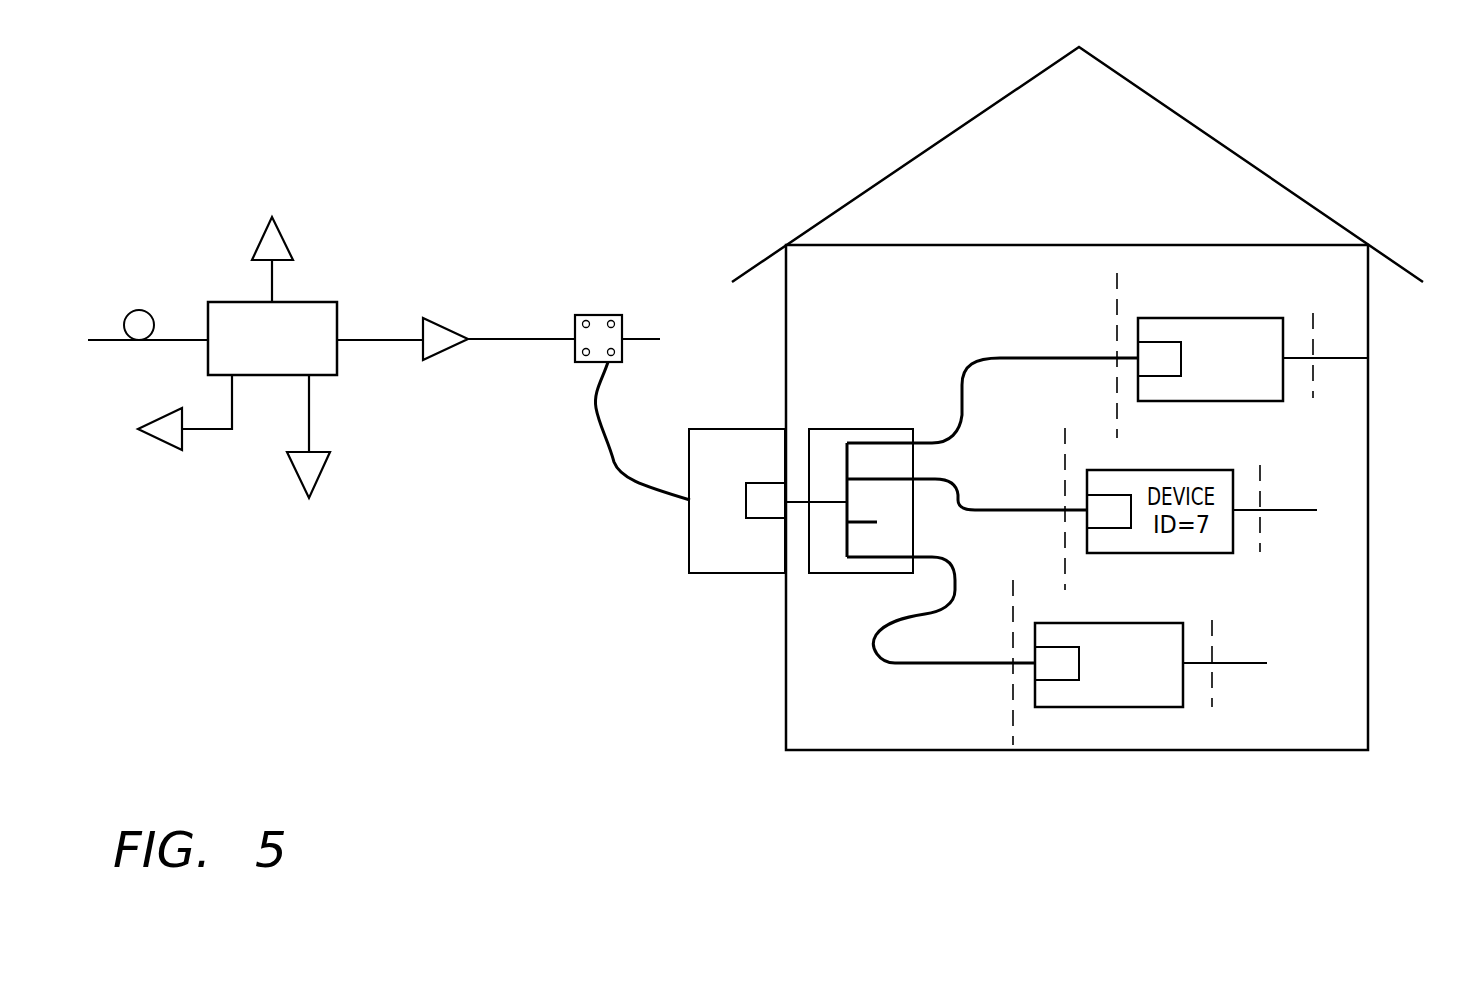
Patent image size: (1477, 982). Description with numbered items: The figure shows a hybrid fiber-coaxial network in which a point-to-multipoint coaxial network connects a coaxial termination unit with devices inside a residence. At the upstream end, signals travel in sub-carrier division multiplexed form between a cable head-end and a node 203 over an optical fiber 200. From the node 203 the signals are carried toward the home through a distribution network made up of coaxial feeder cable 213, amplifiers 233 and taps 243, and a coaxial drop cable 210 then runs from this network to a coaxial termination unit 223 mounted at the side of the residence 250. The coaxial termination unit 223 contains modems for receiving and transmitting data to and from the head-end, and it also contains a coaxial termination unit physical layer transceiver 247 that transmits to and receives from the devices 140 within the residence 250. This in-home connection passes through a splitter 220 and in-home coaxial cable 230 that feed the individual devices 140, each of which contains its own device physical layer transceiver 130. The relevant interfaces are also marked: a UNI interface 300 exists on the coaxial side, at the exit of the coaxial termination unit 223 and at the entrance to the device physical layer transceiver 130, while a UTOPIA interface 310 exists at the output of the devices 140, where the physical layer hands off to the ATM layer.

The optical fiber 200 is at (178, 340).
The node 203 is at (327, 377).
The amplifiers 233 is at (285, 242).
The coaxial feeder cable 213 is at (308, 412).
The taps 243 is at (602, 315).
The coaxial drop cable 210 is at (610, 462).
The coaxial termination unit 223 is at (717, 573).
The coaxial termination unit physical layer transceiver 247 is at (746, 505).
The splitter 220 is at (833, 429).
The residence 250 is at (1368, 485).
The in-home coaxial cable 230 is at (923, 665).
The devices 140 is at (1283, 318).
The device physical layer transceiver 130 is at (1057, 680).
The UNI interface 300 is at (1012, 712).
The UTOPIA interface 310 is at (1212, 677).